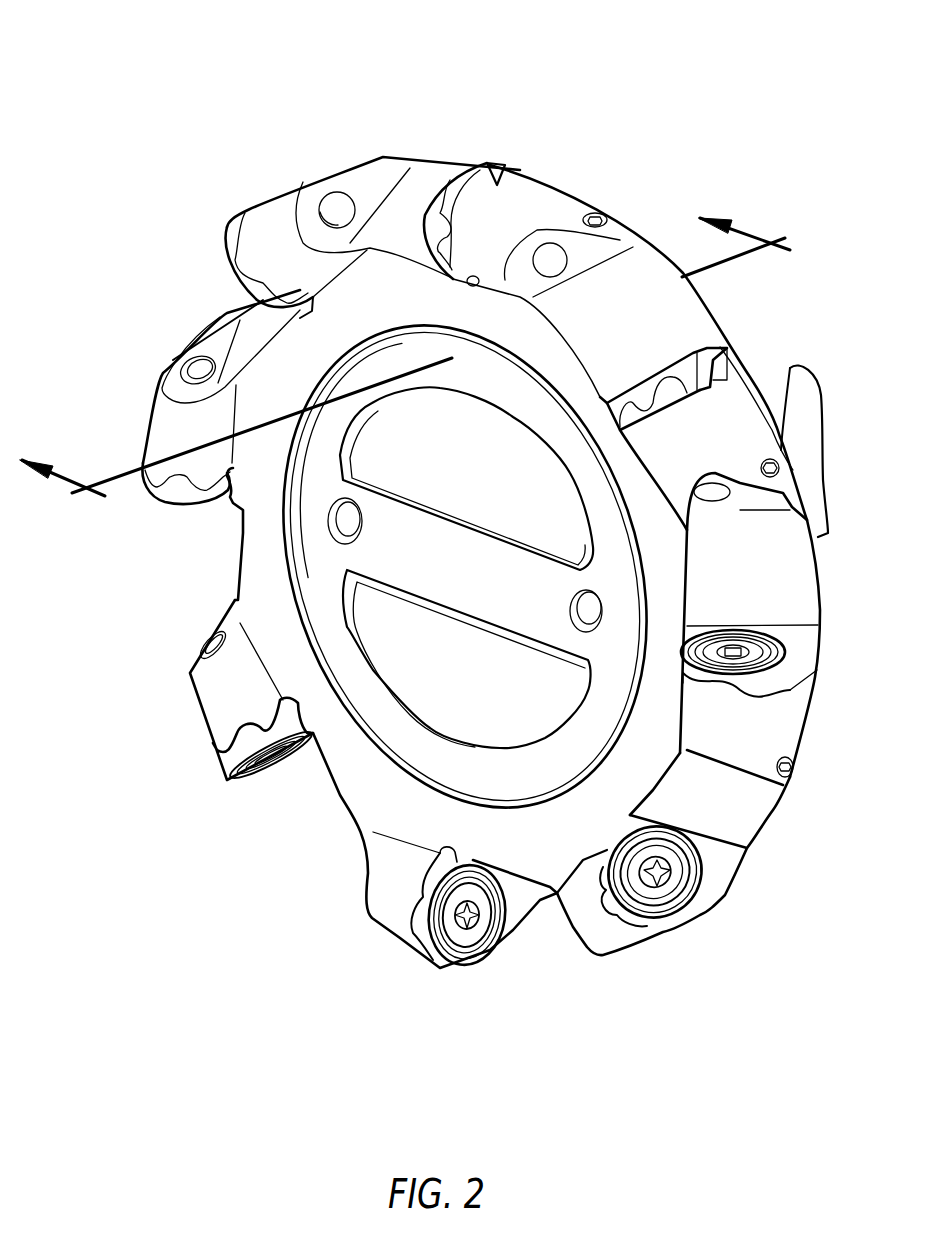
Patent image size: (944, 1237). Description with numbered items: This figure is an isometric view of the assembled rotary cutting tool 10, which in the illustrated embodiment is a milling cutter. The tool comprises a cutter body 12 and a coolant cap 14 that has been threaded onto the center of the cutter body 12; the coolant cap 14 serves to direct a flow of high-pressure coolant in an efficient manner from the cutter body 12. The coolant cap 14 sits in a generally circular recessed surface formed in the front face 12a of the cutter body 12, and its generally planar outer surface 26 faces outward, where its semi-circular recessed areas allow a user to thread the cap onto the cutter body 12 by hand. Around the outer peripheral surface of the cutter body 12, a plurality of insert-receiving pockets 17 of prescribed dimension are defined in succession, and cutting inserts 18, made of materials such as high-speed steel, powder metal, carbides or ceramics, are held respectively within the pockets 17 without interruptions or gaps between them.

The rotary cutting tool 10 is at (222, 121).
The cutter body 12 is at (536, 159).
The front face 12a is at (256, 555).
The coolant cap 14 is at (401, 736).
The outer surface 26 is at (411, 650).
The insert-receiving pocket 17 is at (660, 936).
The cutting insert 18 is at (677, 910).